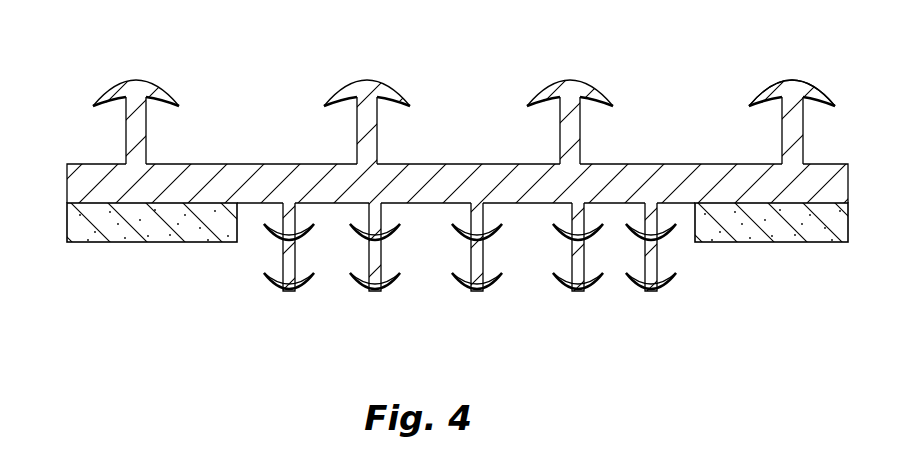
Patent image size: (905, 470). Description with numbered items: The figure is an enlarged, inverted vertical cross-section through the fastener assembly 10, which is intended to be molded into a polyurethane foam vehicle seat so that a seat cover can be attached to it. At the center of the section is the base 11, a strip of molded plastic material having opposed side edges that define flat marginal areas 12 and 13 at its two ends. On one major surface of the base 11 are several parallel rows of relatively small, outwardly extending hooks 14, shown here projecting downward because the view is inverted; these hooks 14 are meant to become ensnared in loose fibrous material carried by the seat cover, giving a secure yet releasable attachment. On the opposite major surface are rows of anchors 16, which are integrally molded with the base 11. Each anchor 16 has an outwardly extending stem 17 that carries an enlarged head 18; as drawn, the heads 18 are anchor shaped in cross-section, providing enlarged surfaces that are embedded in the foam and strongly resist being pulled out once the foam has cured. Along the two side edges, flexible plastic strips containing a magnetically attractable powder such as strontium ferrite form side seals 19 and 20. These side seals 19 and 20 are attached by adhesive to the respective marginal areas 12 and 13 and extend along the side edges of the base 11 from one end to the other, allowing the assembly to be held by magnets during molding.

The fastener assembly 10 is at (178, 345).
The base 11 is at (234, 162).
The flat marginal area 12 is at (843, 188).
The flat marginal area 13 is at (67, 197).
The hooks 14 is at (293, 303).
The anchors 16 is at (138, 60).
The stems 17 is at (805, 146).
The heads 18 is at (821, 92).
The side seal 19 is at (848, 244).
The side seal 20 is at (190, 240).